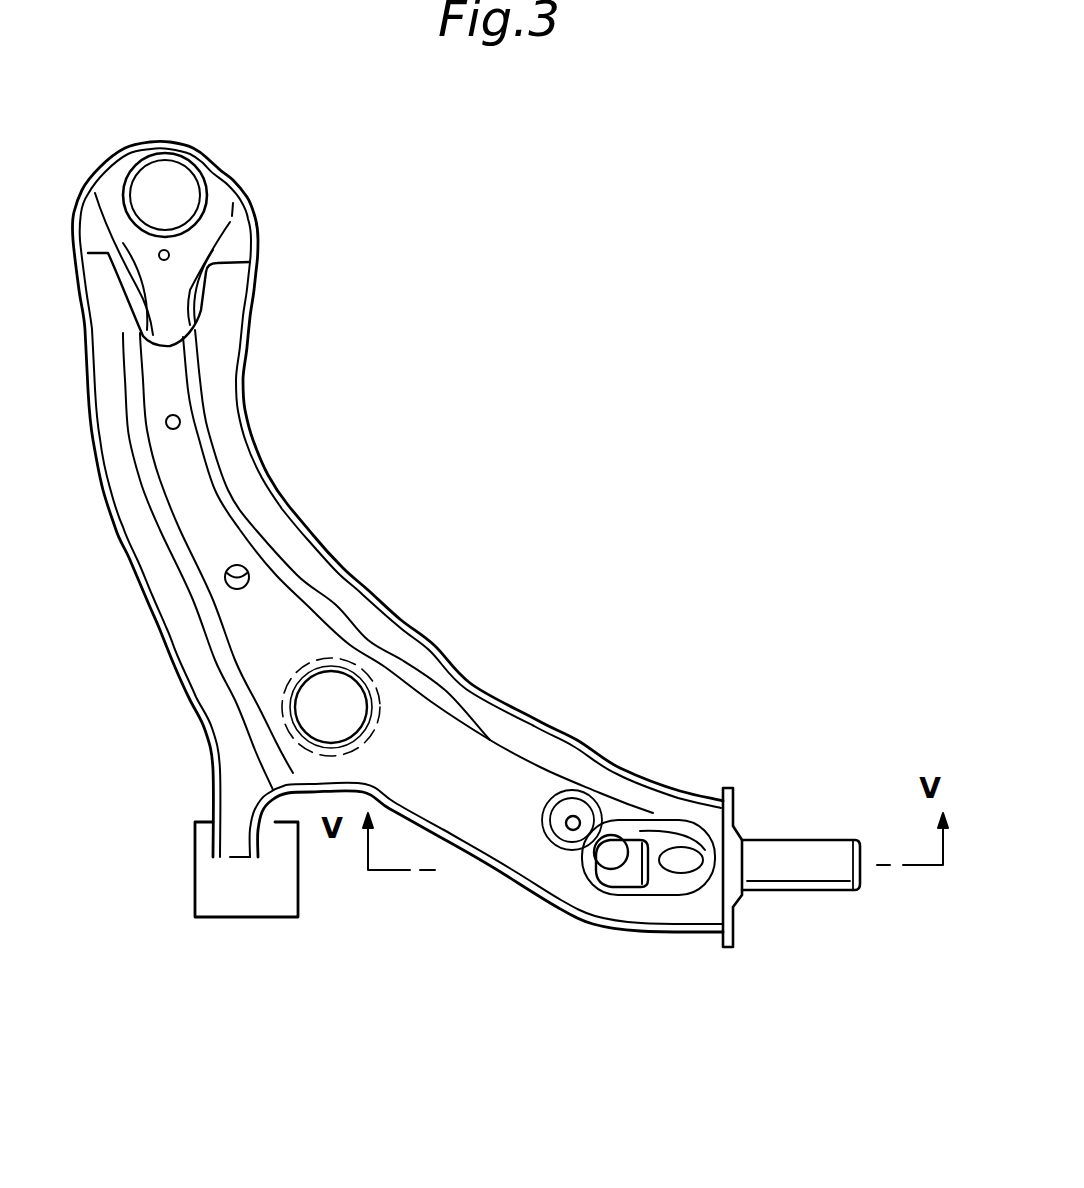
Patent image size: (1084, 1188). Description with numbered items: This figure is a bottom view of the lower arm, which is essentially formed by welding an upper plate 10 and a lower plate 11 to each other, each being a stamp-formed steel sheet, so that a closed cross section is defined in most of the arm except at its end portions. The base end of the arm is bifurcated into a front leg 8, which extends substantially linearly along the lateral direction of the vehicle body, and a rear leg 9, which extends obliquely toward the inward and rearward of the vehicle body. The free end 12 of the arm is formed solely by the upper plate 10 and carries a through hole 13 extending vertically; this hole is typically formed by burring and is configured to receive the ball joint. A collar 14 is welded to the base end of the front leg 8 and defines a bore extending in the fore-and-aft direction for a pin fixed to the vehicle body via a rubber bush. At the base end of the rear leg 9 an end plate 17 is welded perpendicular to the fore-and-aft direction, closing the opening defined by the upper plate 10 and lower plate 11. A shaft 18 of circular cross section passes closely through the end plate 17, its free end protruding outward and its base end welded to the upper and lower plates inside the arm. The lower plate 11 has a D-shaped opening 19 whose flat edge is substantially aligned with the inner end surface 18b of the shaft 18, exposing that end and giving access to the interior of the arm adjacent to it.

The front leg 8 is at (207, 780).
The rear leg 9 is at (593, 927).
The upper plate 10 is at (240, 362).
The lower plate 11 is at (253, 495).
The free end 12 is at (213, 190).
The through hole 13 is at (193, 180).
The collar 14 is at (255, 907).
The end plate 17 is at (738, 938).
The shaft 18 is at (820, 885).
The inner end surface 18b is at (633, 847).
The D-shaped opening 19 is at (613, 853).